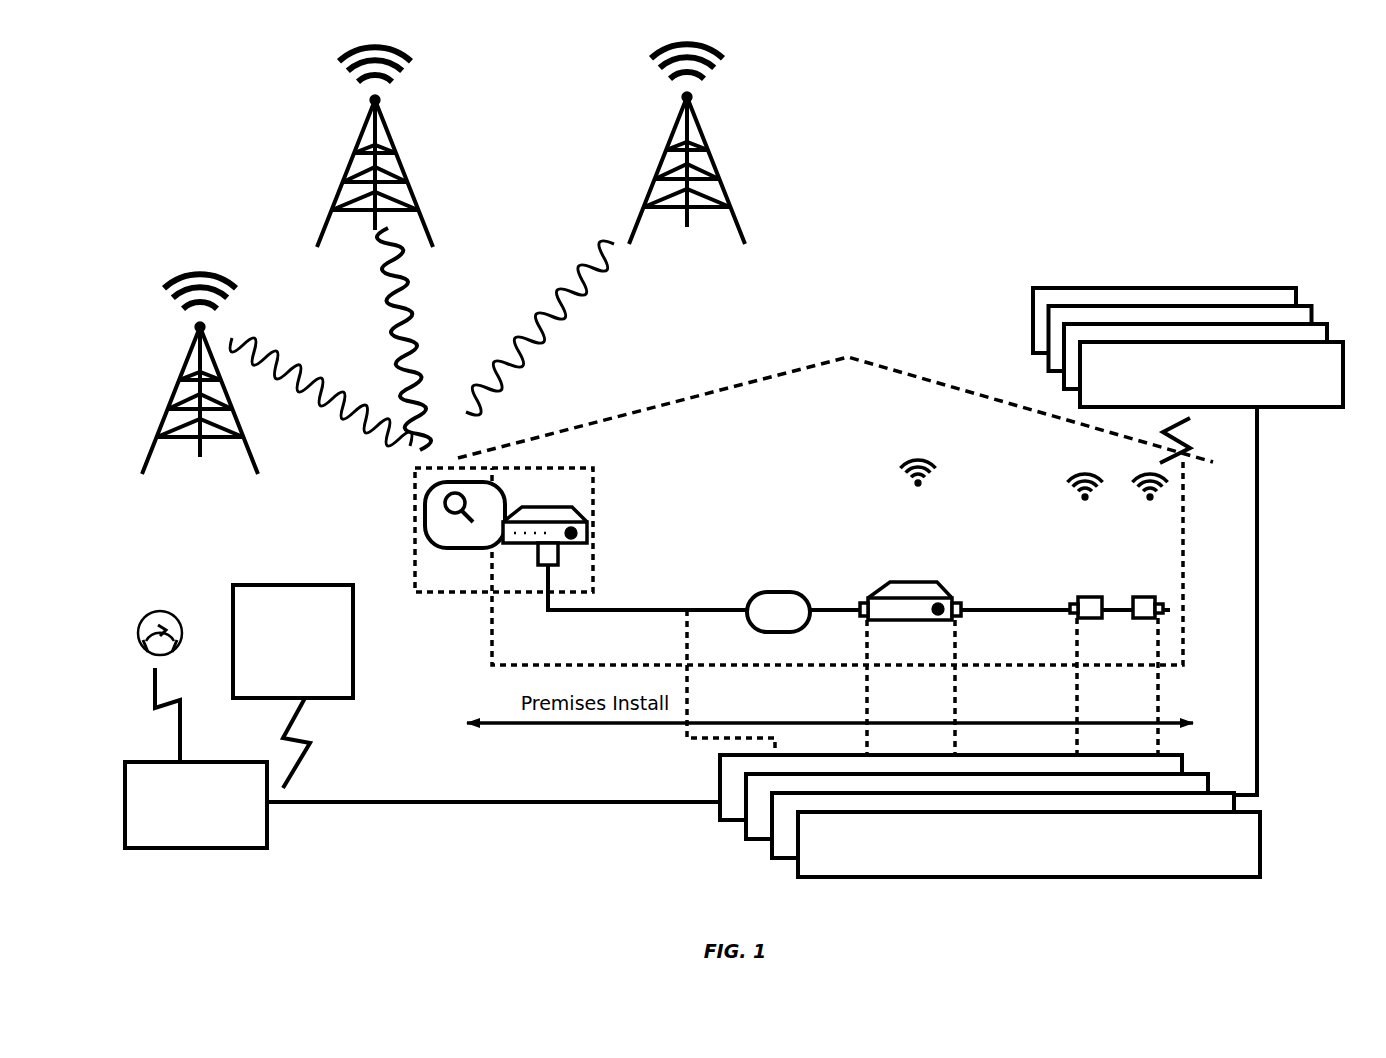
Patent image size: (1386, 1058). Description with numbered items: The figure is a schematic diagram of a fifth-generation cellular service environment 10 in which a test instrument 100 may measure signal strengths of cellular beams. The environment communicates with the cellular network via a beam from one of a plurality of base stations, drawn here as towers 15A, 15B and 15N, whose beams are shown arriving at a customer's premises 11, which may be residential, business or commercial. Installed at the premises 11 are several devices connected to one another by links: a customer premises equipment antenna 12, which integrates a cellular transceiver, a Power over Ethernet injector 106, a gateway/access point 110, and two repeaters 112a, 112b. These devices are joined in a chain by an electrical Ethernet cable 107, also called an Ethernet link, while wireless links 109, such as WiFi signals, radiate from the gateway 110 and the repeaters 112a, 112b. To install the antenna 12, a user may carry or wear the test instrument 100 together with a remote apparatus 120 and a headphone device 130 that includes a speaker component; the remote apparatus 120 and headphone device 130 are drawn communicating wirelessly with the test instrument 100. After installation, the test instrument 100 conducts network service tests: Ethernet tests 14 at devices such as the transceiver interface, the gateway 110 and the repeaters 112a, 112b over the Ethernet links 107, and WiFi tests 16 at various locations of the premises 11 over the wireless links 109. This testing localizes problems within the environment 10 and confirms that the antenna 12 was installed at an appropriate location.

The 5G service environment 10 is at (847, 160).
The premises 11 is at (963, 388).
The 5G CPE antenna 12 is at (410, 556).
The Ethernet tests 14 is at (1018, 868).
The 5G base station 15A is at (170, 378).
The 5G base station 15B is at (348, 155).
The 5G base station 15N is at (663, 152).
The WiFi tests 16 is at (1200, 399).
The test instrument 100 is at (179, 843).
The Power over Ethernet (PoE) injector 106 is at (780, 586).
The Ethernet cable 107 is at (660, 601).
The wireless links 109 is at (1135, 469).
The gateway/access point 110 is at (912, 582).
The repeater 112a is at (1085, 596).
The repeater 112b is at (1140, 596).
The remote apparatus 120 is at (275, 681).
The headphone device 130 is at (165, 608).